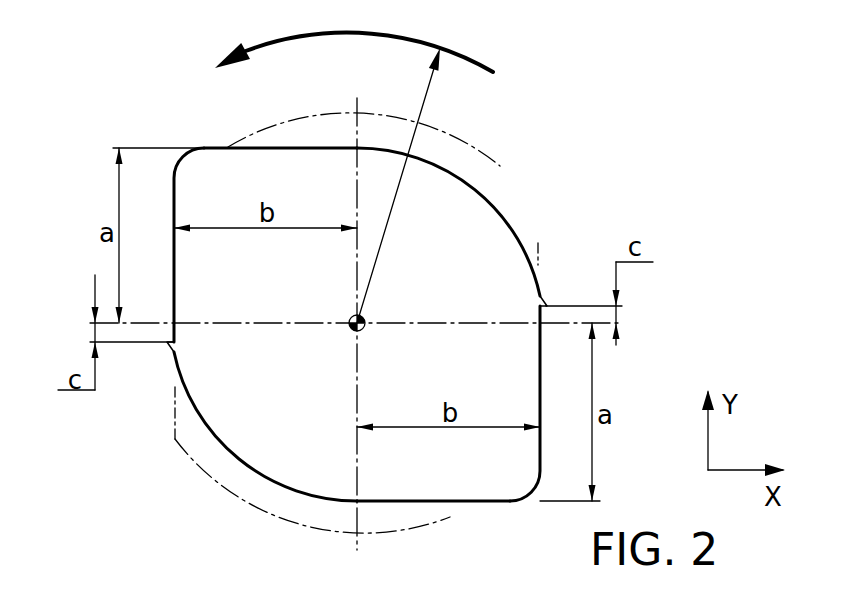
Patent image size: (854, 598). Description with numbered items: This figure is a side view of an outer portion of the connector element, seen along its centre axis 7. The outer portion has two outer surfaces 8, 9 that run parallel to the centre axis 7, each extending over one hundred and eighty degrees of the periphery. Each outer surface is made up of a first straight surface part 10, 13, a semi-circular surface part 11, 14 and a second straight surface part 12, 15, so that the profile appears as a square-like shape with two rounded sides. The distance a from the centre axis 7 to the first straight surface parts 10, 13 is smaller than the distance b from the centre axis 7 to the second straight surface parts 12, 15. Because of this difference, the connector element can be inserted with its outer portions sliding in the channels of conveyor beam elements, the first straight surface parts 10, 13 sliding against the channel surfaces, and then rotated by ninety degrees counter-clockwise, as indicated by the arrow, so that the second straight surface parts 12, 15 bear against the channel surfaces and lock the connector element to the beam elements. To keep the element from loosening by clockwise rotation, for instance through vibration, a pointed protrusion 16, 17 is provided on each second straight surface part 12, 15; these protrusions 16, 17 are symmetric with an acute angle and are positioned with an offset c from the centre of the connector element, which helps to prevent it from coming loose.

The centre axis 7 is at (357, 323).
The outer surface 8 is at (498, 126).
The outer surface 9 is at (222, 514).
The first straight surface part 10 is at (266, 125).
The semi-circular surface part 11 is at (506, 180).
The second straight surface part 12 is at (572, 385).
The first straight surface part 13 is at (462, 522).
The semi-circular surface part 14 is at (200, 474).
The second straight surface part 15 is at (150, 220).
The pointed protrusion 16 is at (546, 305).
The pointed protrusion 17 is at (168, 341).